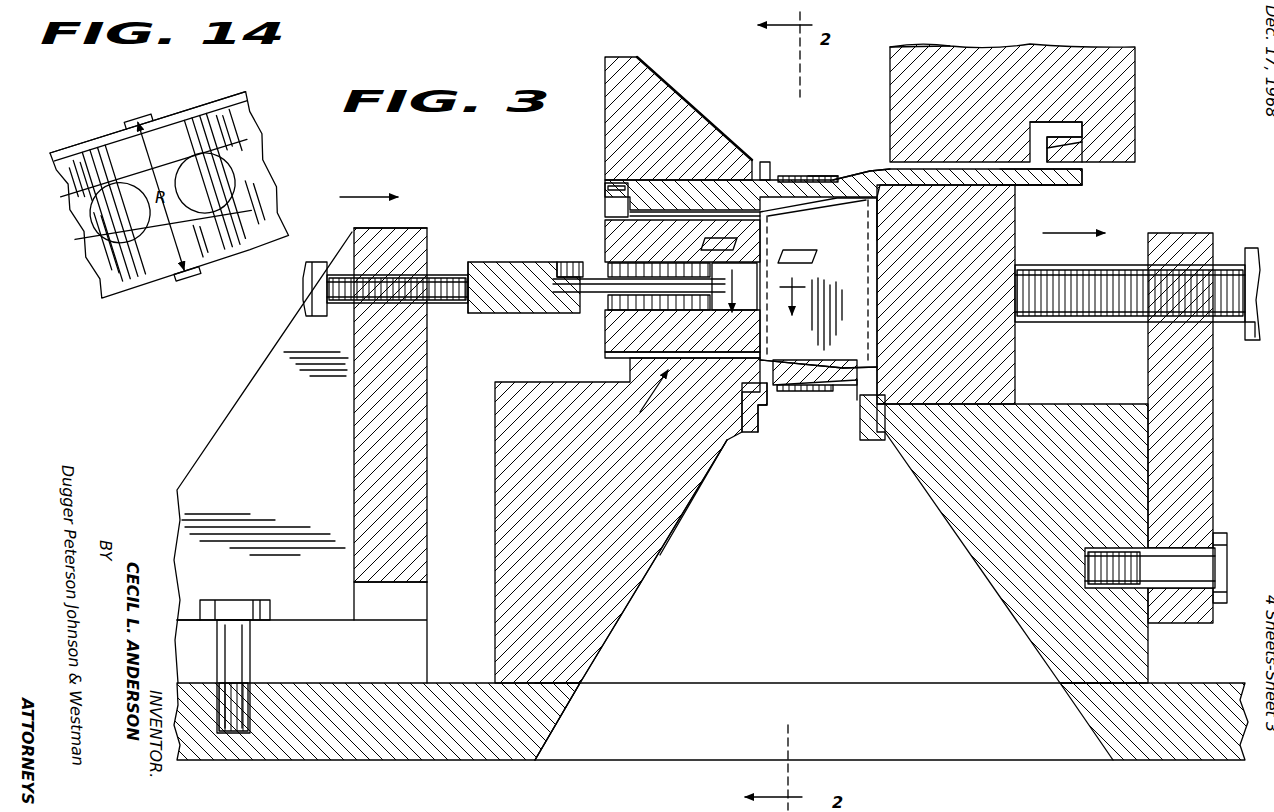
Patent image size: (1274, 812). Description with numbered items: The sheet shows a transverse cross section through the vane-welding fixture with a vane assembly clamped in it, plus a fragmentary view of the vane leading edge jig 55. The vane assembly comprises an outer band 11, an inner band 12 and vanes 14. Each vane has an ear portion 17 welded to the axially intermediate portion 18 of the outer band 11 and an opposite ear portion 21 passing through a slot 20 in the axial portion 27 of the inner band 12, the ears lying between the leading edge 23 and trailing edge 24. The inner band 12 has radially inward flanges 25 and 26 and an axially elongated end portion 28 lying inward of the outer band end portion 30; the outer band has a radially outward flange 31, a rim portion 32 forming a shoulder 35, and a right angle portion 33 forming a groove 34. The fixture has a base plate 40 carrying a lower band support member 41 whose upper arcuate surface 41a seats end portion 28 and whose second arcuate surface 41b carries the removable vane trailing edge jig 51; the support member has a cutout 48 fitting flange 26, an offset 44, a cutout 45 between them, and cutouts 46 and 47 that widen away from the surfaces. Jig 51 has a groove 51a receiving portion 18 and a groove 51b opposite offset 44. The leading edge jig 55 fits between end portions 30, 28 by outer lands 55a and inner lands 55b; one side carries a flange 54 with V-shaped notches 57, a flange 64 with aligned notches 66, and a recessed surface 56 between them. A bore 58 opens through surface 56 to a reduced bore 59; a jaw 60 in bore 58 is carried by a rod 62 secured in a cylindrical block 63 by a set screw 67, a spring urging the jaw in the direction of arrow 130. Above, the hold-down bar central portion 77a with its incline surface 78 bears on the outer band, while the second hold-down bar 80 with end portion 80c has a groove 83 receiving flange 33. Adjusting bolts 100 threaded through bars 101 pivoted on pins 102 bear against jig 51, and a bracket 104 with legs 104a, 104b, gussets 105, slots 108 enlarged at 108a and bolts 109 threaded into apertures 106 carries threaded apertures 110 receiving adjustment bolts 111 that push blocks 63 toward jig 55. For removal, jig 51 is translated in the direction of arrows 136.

In FIG. 3, the outer band 11 is at (1092, 184).
In FIG. 3, the inner band 12 is at (643, 401).
In FIG. 3, the vanes 14 is at (850, 299).
In FIG. 3, the ear portion 17 is at (800, 176).
In FIG. 3, the axially intermediate portion 18 is at (826, 176).
In FIG. 3, the slots 20 is at (860, 382).
In FIG. 3, the ear portion 21 is at (823, 394).
In FIG. 3, the leading edge 23 is at (762, 330).
In FIG. 3, the trailing edge 24 is at (870, 262).
In FIG. 3, the flange 25 is at (852, 400).
In FIG. 3, the second flange 26 is at (766, 394).
In FIG. 3, the axial portion 27 is at (800, 376).
In FIG. 3, the end portion 28 is at (605, 356).
In FIG. 3, the end portion 30 is at (608, 190).
In FIG. 3, the flange 31 is at (765, 160).
In FIG. 3, the rim portion 32 is at (1035, 186).
In FIG. 3, the right angle portion 33 is at (1060, 125).
In FIG. 3, the groove 34 is at (1055, 148).
In FIG. 3, the shoulder 35 is at (878, 172).
In FIG. 3, the base plate 40 is at (428, 752).
In FIG. 3, the lower band support member 41 is at (620, 596).
In FIG. 3, the upper arcuate surface 41a is at (505, 383).
In FIG. 3, the second arcuate surface 41b is at (1043, 404).
In FIG. 3, the offset 44 is at (872, 441).
In FIG. 3, the cutout 45 is at (763, 433).
In FIG. 3, the cutout 46 is at (665, 552).
In FIG. 3, the cutout 47 is at (565, 720).
In FIG. 3, the cutout 48 is at (745, 433).
In FIG. 3, the vane trailing edge jig 51 is at (1013, 352).
In FIG. 3, the arcuate groove 51a is at (875, 220).
In FIG. 3, the groove 51b is at (882, 396).
In FIG. 14, the vane leading edge jig 55 is at (249, 90).
In FIG. 3, the vane leading edge jig 55 is at (600, 230).
In FIG. 14, the bore 58 is at (95, 230).
In FIG. 3, the bore 58 is at (612, 263).
In FIG. 3, the reduced diameter bore 59 is at (598, 305).
In FIG. 14, the jaw 60 is at (215, 182).
In FIG. 3, the jaw 60 is at (760, 256).
In FIG. 3, the rod 62 is at (545, 300).
In FIG. 3, the cylindrical block 63 is at (478, 262).
In FIG. 3, the set screw 67 is at (560, 265).
In FIG. 3, the incline surface 78 is at (642, 57).
In FIG. 3, the central arcuate portion 77a is at (690, 100).
In FIG. 3, the second hold-down bar 80 is at (1130, 70).
In FIG. 3, the end portion 80c is at (920, 55).
In FIG. 3, the groove 83 is at (1092, 140).
In FIG. 3, the adjusting bolts 100 is at (1240, 248).
In FIG. 3, the bar 101 is at (1175, 623).
In FIG. 3, the pivot pin 102 is at (1228, 550).
In FIG. 3, the bracket 104 is at (355, 494).
In FIG. 3, the leg 104a is at (355, 434).
In FIG. 3, the leg 104b is at (196, 605).
In FIG. 3, the reinforcing gussets 105 is at (195, 462).
In FIG. 3, the apertures 106 is at (262, 700).
In FIG. 3, the slot 108 is at (426, 646).
In FIG. 3, the enlarged slot portion 108a is at (432, 576).
In FIG. 3, the bolt 109 is at (262, 600).
In FIG. 3, the threaded aperture 110 is at (355, 318).
In FIG. 3, the adjustment bolt 111 is at (305, 288).
In FIG. 3, the arrow 130 is at (372, 188).
In FIG. 3, the arrows 136 is at (1070, 228).
In FIG. 14, the flange 54 is at (250, 112).
In FIG. 14, the planar surface 56 is at (246, 152).
In FIG. 14, the notches 57 is at (212, 78).
In FIG. 14, the second flange 64 is at (250, 217).
In FIG. 14, the notches 66 is at (240, 227).
In FIG. 14, the outer lands 55a is at (140, 112).
In FIG. 14, the lands 55b is at (192, 278).